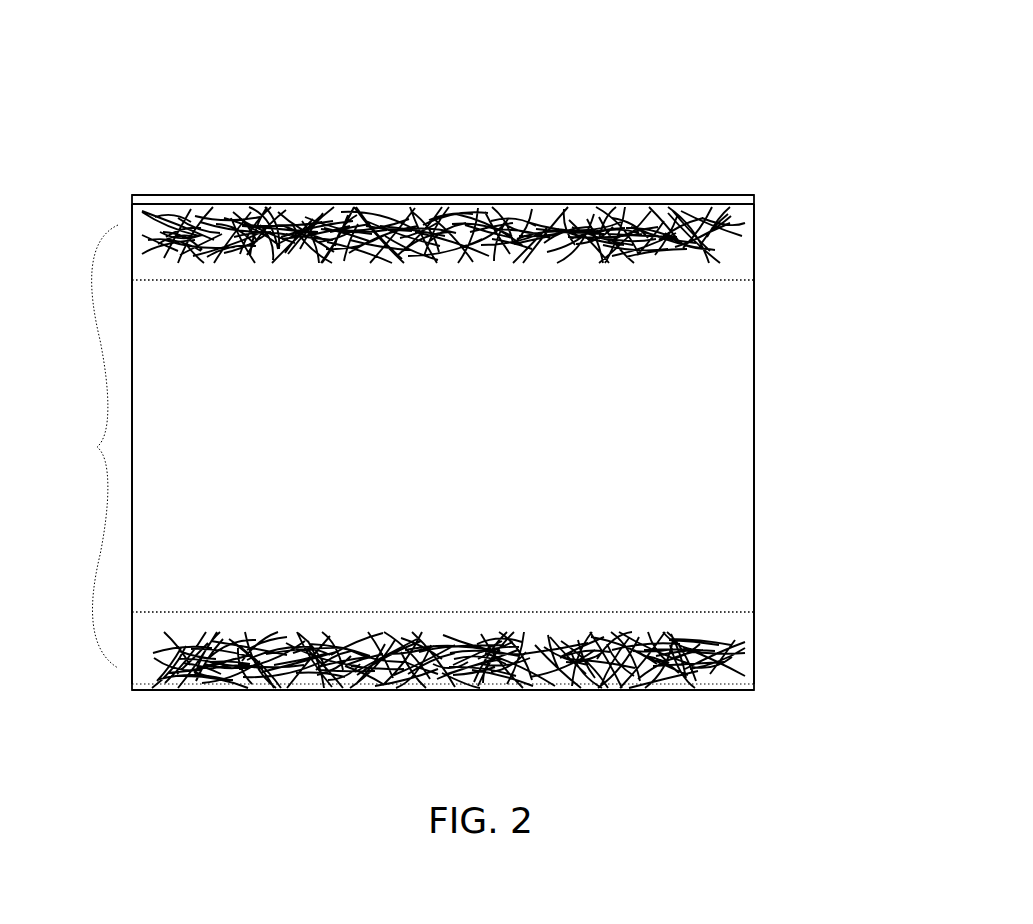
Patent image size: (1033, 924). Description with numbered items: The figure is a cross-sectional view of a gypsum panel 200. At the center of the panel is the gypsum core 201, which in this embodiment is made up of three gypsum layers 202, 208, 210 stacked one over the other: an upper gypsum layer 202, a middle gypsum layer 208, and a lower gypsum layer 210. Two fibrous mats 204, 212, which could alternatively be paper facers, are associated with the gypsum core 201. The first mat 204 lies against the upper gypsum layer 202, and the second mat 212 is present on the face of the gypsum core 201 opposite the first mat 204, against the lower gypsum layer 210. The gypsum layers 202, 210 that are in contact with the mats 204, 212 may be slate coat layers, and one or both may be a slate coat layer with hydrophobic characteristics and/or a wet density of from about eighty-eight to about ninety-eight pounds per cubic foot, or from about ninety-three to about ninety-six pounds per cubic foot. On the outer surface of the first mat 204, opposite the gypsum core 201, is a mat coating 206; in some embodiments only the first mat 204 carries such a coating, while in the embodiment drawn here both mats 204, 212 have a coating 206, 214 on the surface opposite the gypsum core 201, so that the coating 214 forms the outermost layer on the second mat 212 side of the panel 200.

The gypsum panel 200 is at (488, 123).
The gypsum core 201 is at (93, 447).
The gypsum layer 202 is at (740, 275).
The first mat 204 is at (743, 245).
The mat coating 206 is at (678, 195).
The gypsum layer 208 is at (736, 467).
The gypsum layer 210 is at (735, 633).
The second mat 212 is at (740, 665).
The coating 214 is at (703, 688).